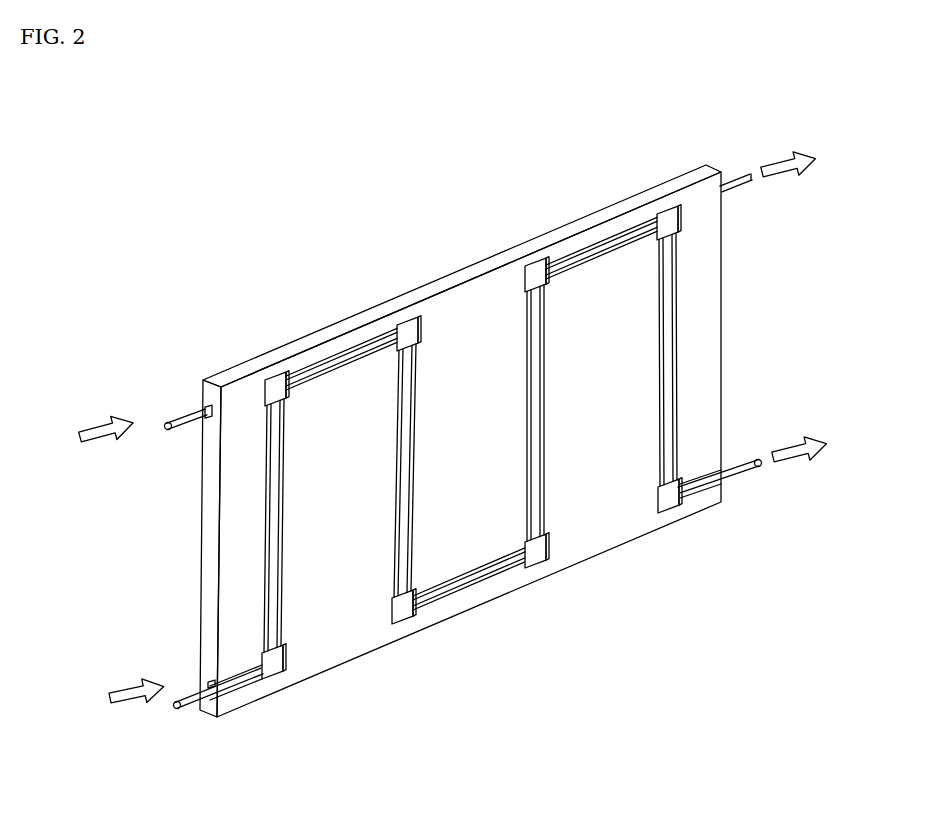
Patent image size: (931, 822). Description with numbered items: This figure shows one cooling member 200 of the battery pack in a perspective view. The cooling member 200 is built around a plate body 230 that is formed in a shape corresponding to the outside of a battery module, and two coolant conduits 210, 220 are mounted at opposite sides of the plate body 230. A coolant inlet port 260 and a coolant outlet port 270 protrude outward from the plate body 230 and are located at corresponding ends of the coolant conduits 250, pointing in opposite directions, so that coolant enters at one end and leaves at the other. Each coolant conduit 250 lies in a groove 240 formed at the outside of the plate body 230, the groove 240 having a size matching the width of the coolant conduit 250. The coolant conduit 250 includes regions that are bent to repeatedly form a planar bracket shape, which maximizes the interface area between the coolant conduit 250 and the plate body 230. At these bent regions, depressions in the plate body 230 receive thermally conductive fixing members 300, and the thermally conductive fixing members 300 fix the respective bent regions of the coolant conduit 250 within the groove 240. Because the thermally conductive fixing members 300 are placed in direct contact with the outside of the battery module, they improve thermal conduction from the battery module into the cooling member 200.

The cooling member 200 is at (183, 175).
The coolant conduit 210 is at (172, 708).
The coolant conduit 220 is at (164, 427).
The plate body 230 is at (489, 257).
The groove 240 is at (719, 466).
The coolant conduit 250 is at (495, 576).
The coolant inlet port 260 is at (168, 422).
The coolant outlet port 270 is at (753, 170).
The thermally conductive fixing member 300 is at (670, 505).